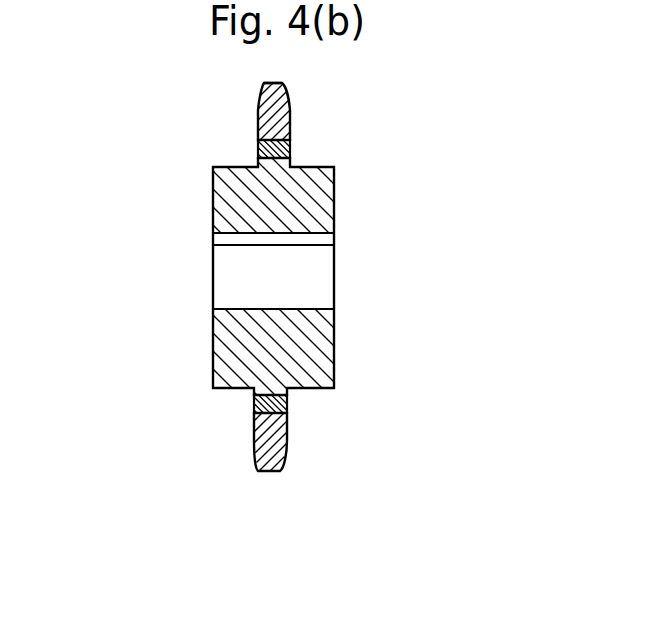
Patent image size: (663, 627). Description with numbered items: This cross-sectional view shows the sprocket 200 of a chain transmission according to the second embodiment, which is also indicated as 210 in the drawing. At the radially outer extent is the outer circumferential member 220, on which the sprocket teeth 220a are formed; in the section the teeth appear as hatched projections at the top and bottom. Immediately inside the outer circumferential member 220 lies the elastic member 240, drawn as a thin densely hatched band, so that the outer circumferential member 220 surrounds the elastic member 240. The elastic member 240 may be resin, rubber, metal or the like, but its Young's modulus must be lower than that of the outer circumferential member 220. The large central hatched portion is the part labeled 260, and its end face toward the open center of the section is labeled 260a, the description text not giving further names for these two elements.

The sprocket 200 is at (196, 449).
The sprocket body 210 is at (273, 271).
The outer circumferential member 220 is at (263, 125).
The sprocket teeth 220a is at (280, 95).
The elastic member 240 is at (285, 149).
The hub / boss portion 260 is at (323, 204).
The hub end surface 260a is at (280, 309).